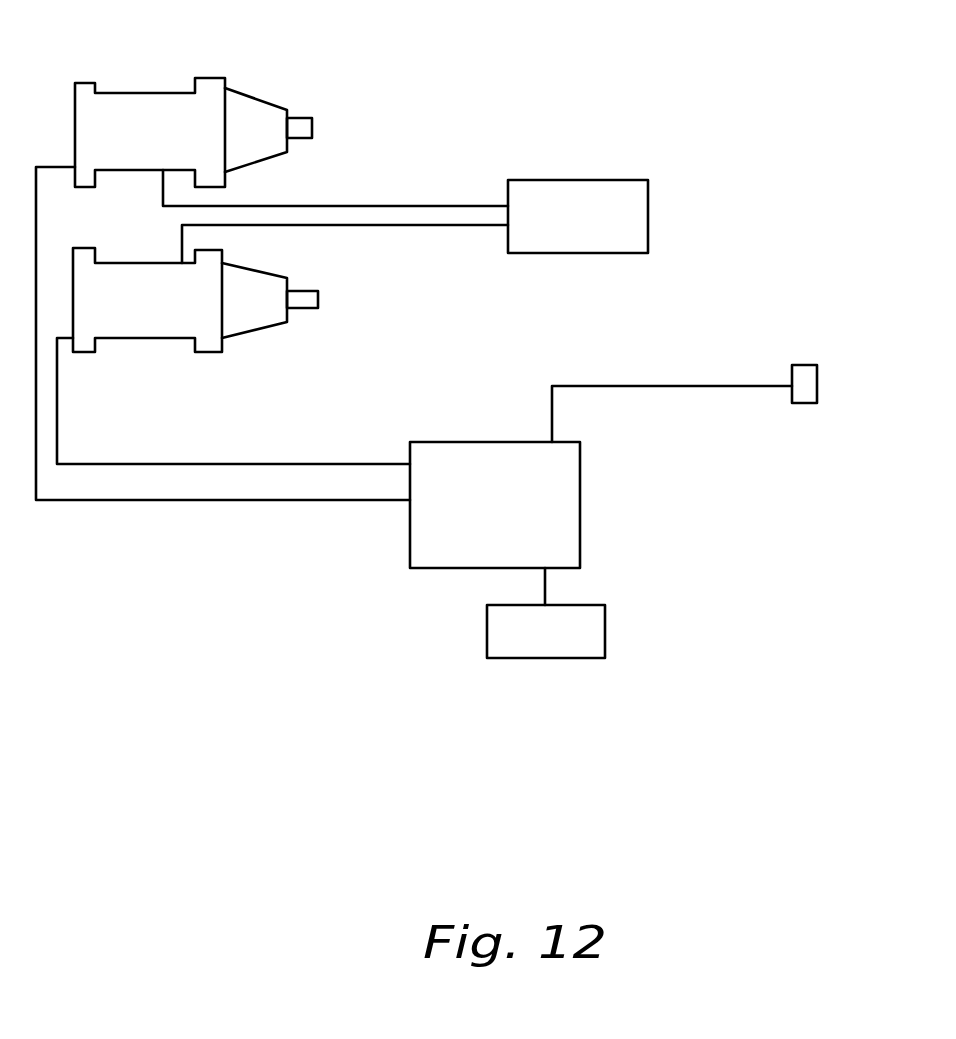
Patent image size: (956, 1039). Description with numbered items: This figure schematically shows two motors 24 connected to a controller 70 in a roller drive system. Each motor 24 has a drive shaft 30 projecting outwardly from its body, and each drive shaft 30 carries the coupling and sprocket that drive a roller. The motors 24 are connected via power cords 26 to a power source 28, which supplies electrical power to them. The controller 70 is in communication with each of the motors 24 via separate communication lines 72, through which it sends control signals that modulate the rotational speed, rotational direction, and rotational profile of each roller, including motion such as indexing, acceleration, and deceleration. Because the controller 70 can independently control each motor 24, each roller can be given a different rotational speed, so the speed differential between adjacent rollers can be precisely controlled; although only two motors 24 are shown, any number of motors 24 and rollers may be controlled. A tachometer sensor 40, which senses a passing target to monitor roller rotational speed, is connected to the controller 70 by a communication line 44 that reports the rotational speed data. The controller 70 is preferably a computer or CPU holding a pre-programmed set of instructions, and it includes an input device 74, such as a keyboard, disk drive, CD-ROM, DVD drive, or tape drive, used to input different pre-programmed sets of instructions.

The motor 24 is at (163, 100).
The drive shaft 30 is at (307, 118).
The power cord 26 is at (393, 206).
The power source 28 is at (648, 212).
The communication line 72 is at (247, 465).
The controller 70 is at (560, 498).
The communication line 44 is at (638, 386).
The tachometer sensor 40 is at (812, 378).
The input device 74 is at (590, 640).